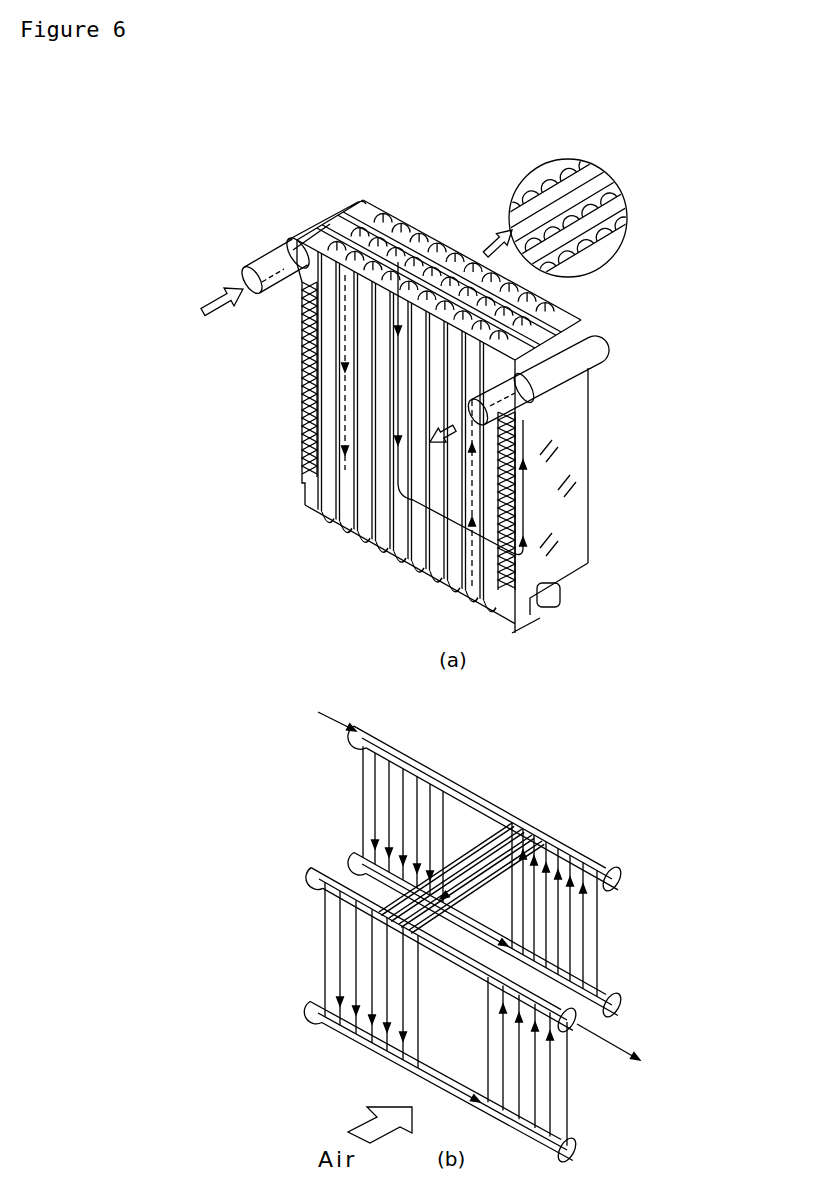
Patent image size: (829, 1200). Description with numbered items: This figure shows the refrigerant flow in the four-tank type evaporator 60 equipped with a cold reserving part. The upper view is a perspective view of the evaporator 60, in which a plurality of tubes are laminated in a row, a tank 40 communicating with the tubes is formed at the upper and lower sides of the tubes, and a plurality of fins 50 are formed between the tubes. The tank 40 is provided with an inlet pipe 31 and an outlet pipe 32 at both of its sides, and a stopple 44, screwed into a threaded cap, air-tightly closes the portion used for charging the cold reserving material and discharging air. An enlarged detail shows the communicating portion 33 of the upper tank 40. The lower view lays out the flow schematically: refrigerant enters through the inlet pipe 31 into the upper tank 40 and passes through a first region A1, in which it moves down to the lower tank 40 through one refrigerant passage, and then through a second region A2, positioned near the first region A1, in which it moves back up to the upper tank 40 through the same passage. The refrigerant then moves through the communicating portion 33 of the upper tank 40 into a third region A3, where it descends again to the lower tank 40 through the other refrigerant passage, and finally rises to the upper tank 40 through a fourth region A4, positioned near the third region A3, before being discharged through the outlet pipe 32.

The inlet pipe 31 is at (264, 262).
The outlet pipe 32 is at (518, 400).
The communicating portion 33 is at (615, 213).
The tank 40 is at (412, 215).
The stopple 44 is at (550, 600).
The fins 50 is at (298, 354).
The four-tank type evaporator 60 is at (510, 150).
The first region A1 is at (365, 800).
The second region A2 is at (606, 920).
The third region A3 is at (330, 958).
The fourth region A4 is at (562, 1092).